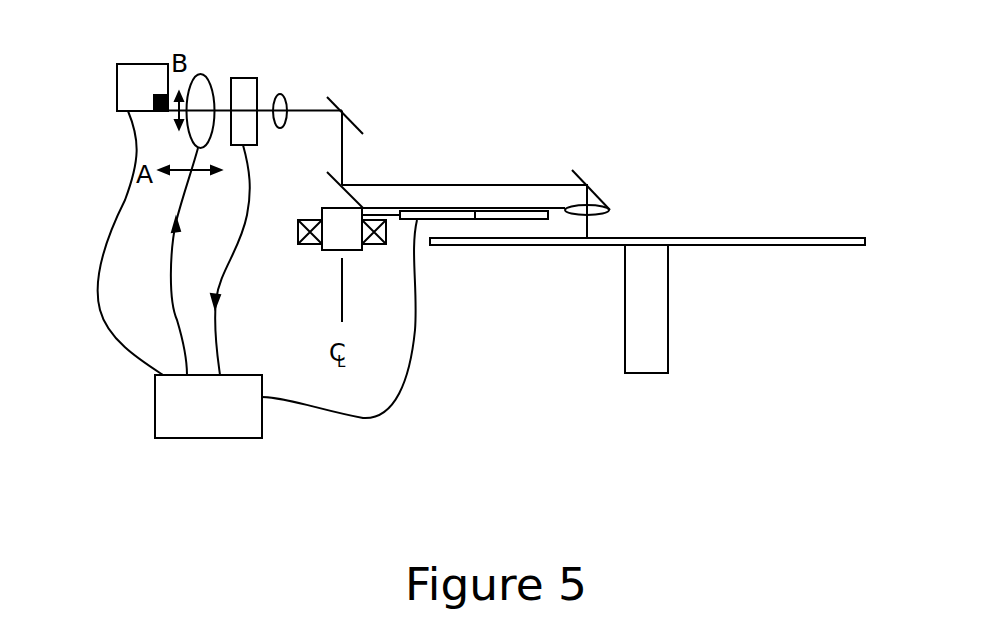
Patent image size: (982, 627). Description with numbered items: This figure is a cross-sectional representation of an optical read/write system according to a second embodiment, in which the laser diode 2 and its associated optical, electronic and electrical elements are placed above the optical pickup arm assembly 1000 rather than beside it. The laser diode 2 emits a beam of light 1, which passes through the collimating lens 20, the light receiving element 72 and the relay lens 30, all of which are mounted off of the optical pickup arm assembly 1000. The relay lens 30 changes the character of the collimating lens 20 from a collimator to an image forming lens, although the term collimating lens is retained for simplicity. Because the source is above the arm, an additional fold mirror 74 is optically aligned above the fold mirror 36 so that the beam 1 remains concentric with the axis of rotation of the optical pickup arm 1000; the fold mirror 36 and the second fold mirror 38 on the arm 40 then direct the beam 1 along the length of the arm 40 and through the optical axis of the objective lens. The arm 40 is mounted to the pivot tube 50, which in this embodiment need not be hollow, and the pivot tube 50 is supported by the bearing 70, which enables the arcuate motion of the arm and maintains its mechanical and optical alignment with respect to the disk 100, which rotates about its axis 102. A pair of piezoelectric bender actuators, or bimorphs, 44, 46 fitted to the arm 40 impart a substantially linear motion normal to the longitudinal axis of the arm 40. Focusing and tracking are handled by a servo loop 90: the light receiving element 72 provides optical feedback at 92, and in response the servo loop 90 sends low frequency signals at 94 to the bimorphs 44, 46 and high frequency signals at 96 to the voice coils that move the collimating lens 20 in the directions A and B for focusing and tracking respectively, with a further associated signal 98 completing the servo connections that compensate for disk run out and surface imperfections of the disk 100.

The laser diode 2 is at (132, 87).
The collimating lens 20 is at (202, 87).
The light receiving element 72 is at (240, 88).
The relay lens 30 is at (282, 100).
The fold mirror 74 is at (333, 101).
The fold mirror 36 is at (330, 177).
The optical pickup arm assembly 1000 is at (427, 150).
The beam of light 1 is at (480, 185).
The arm 40 is at (433, 207).
The fold mirror 38 is at (585, 187).
The piezoelectric bender actuator 44 is at (452, 220).
The piezoelectric bender actuator 46 is at (513, 220).
The disk 100 is at (778, 238).
The axis 102 is at (657, 330).
The bearing 70 is at (297, 230).
The pivot tube 50 is at (317, 253).
The servo loop 90 is at (180, 438).
The servo loop signal 98 is at (115, 220).
The high frequency signals 96 is at (170, 258).
The optical feedback signal 92 is at (220, 255).
The low frequency signals 94 is at (330, 433).